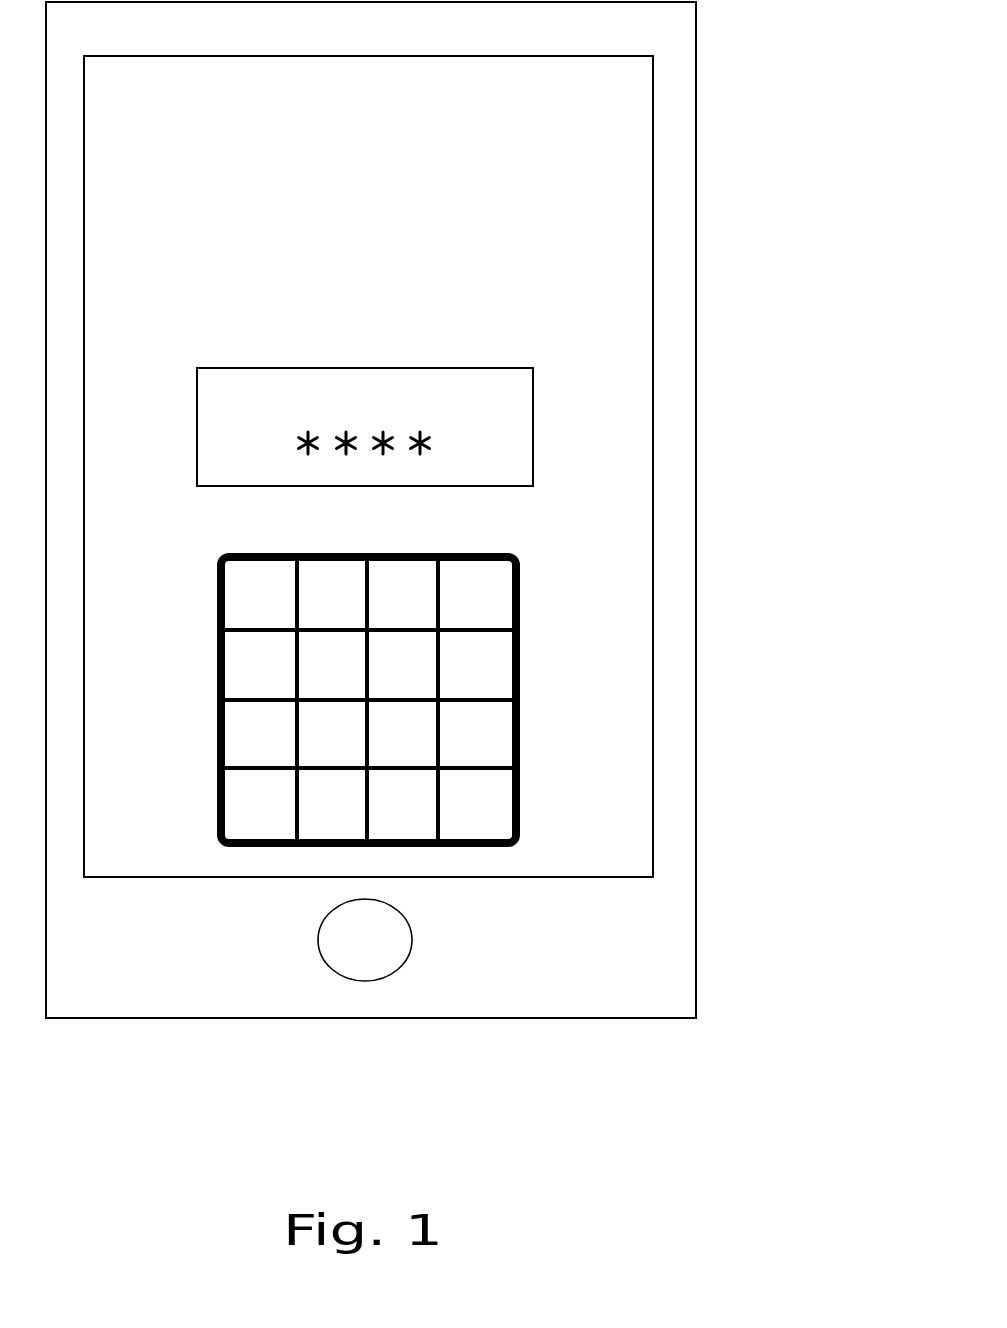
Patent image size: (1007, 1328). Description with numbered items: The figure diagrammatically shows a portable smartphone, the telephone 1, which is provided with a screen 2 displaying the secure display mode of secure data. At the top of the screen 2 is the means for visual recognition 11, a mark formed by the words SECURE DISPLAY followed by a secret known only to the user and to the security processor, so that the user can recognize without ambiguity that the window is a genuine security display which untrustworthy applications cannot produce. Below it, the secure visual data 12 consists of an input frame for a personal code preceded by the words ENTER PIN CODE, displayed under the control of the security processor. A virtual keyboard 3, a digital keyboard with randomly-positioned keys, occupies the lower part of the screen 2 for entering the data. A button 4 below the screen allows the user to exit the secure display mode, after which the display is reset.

The telephone 1 is at (698, 207).
The screen 2 is at (653, 428).
The means for visual recognition 11 is at (623, 125).
The secure visual data 12 is at (534, 468).
The virtual keyboard 3 is at (623, 741).
The button 4 is at (369, 954).